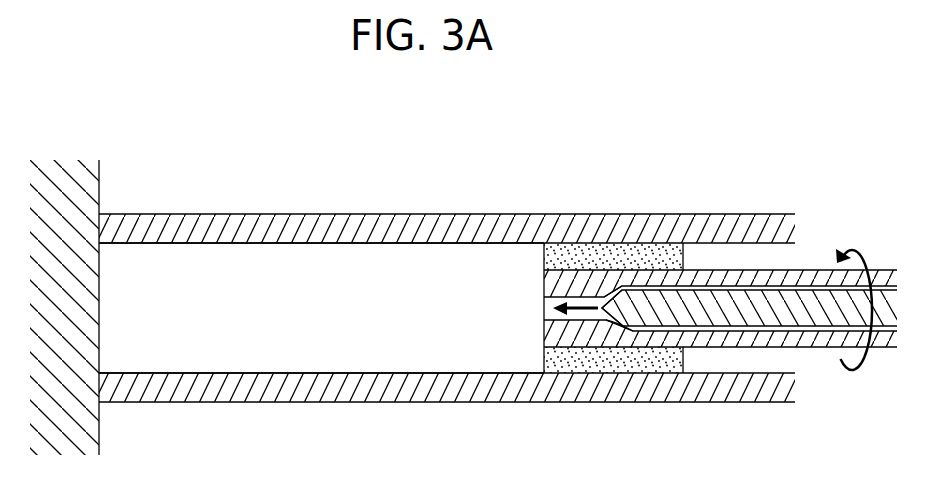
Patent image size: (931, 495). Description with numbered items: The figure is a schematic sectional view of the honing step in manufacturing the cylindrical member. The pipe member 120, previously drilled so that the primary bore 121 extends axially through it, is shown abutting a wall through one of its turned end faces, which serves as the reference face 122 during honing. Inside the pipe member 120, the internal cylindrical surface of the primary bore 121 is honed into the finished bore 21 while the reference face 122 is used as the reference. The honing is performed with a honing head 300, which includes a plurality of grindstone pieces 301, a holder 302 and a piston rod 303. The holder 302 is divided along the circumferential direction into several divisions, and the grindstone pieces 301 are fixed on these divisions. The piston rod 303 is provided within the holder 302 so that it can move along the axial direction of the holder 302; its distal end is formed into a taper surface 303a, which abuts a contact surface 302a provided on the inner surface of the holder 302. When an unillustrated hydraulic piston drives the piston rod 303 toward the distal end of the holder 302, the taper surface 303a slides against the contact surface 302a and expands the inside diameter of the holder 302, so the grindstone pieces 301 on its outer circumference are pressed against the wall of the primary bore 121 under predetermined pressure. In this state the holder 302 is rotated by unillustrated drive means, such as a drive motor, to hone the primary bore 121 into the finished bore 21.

The reference face 122 is at (97, 224).
The pipe member 120 is at (267, 228).
The primary bore 121 is at (381, 249).
The grindstone pieces 301 is at (575, 257).
The holder 302 is at (755, 270).
The contact surface 302a is at (628, 325).
The piston rod 303 is at (762, 317).
The taper surface 303a is at (612, 296).
The finished bore 21 is at (695, 245).
The honing head 300 is at (833, 233).